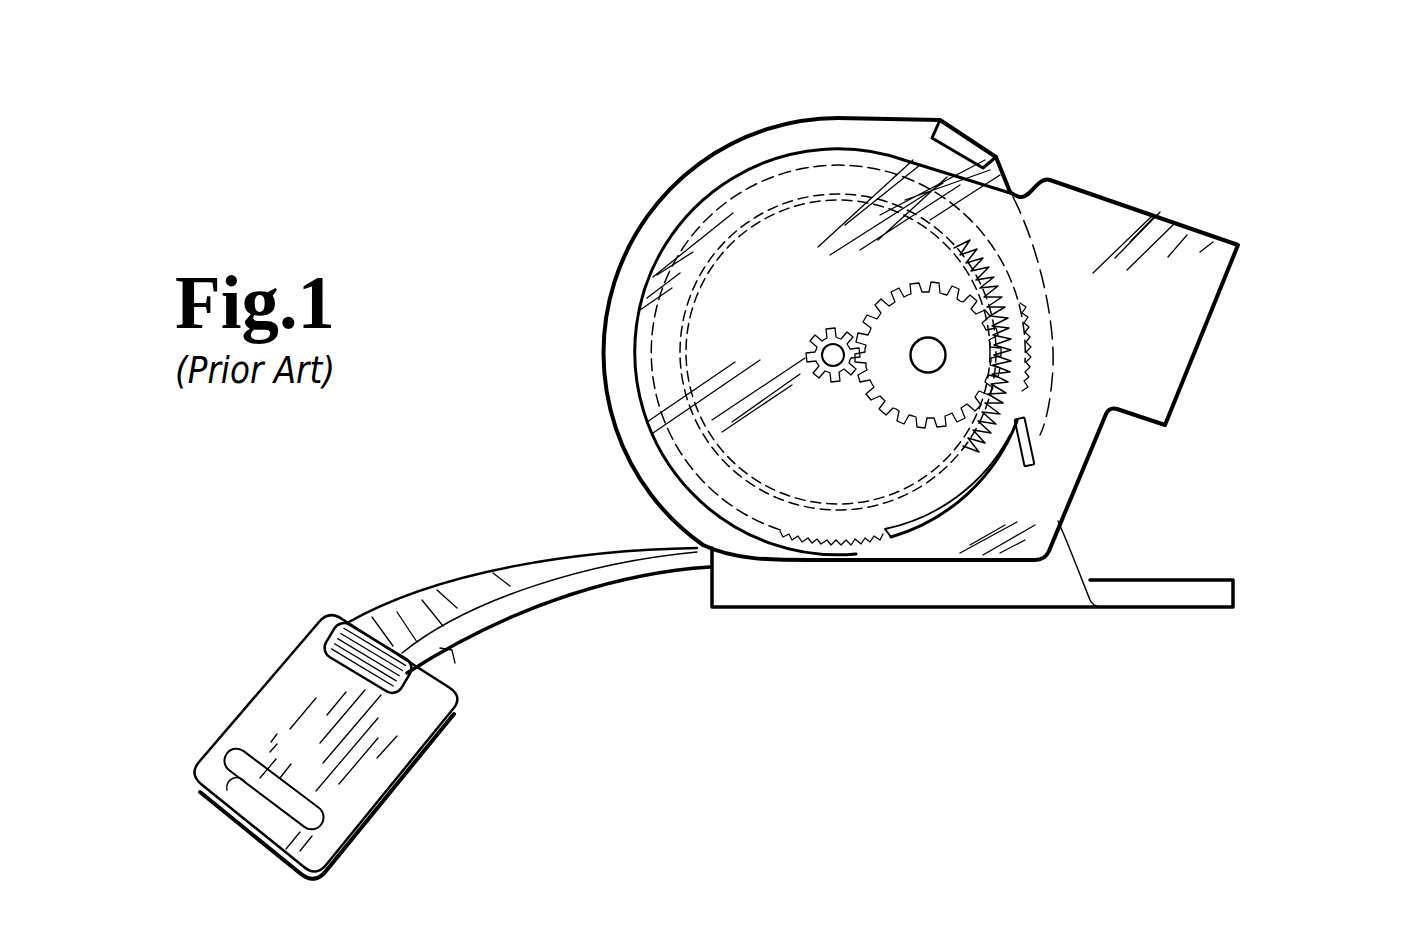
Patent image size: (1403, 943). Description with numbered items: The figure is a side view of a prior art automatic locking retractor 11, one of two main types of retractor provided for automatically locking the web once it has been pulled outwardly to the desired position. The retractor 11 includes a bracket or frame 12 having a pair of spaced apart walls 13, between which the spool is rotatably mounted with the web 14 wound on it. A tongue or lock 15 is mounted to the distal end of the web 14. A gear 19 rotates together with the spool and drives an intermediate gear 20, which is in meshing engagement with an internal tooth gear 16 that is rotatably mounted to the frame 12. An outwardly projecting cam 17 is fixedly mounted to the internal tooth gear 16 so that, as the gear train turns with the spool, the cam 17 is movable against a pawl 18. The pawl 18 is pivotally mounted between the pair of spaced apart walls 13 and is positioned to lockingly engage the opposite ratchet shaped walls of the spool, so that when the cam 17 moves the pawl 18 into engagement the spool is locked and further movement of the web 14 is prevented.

The retractor 11 is at (1200, 183).
The frame 12 is at (1057, 582).
The spaced apart walls 13 is at (612, 313).
The web 14 is at (465, 583).
The tongue 15 is at (393, 747).
The internal tooth gear 16 is at (812, 183).
The cam 17 is at (917, 527).
The pawl 18 is at (1037, 437).
The gear 19 is at (813, 340).
The intermediate gear 20 is at (890, 407).